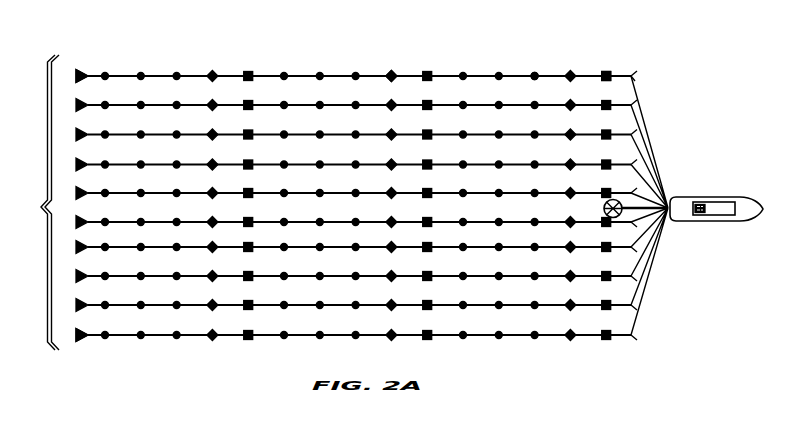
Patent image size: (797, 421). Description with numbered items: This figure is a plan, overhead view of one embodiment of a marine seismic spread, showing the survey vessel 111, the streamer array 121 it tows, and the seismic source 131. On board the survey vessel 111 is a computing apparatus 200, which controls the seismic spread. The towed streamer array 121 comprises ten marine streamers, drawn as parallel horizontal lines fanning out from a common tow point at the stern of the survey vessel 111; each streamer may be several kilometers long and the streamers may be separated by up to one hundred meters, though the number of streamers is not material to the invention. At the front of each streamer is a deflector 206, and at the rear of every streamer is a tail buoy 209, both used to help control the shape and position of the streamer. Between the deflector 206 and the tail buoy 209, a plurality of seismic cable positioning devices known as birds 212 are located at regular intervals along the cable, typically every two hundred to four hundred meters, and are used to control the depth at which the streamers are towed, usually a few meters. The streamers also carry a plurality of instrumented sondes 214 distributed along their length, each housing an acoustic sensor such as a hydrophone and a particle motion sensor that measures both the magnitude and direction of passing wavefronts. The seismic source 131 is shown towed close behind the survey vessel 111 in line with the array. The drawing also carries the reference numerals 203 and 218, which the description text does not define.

The streamer array 121 is at (714, 12).
The tail buoy 209 is at (85, 68).
The streamer 203 is at (77, 339).
The receiver node (diamond) 218 is at (389, 72).
The instrumented sonde 214 is at (532, 72).
The bird 212 is at (604, 70).
The deflector 206 is at (633, 74).
The seismic source 131 is at (603, 208).
The survey vessel 111 is at (710, 197).
The computing apparatus 200 is at (704, 214).